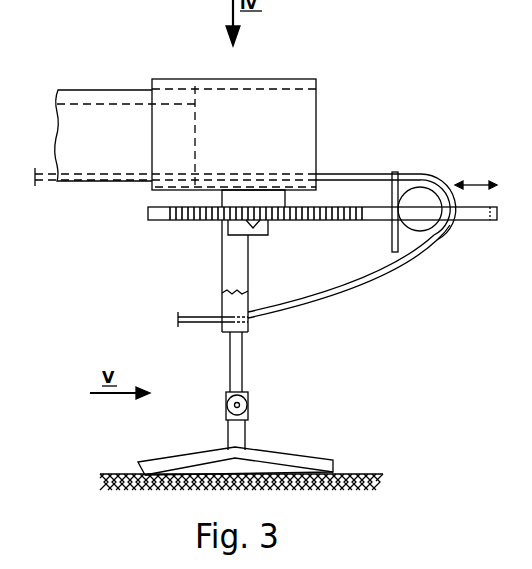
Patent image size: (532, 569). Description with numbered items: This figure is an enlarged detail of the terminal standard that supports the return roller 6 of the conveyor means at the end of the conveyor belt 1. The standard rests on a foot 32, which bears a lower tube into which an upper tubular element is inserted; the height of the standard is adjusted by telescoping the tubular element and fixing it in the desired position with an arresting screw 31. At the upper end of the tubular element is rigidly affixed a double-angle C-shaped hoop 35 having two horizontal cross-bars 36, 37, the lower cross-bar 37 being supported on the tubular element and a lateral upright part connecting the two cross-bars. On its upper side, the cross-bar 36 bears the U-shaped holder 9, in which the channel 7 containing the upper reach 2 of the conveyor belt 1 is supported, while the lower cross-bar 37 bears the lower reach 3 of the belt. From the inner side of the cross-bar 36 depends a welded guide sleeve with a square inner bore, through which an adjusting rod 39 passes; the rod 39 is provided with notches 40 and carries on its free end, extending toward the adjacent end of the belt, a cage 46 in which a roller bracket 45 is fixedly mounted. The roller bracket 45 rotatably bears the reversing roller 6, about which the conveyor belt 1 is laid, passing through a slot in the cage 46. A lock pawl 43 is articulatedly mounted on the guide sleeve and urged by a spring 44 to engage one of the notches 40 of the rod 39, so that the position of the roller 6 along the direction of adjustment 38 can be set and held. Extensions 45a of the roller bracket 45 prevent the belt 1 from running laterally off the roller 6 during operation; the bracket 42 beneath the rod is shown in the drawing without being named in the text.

The conveyor belt 1 is at (121, 80).
The upper reach of conveyor belt 2 is at (348, 174).
The lower reach of conveyor belt 3 is at (371, 281).
The return roller 6 is at (432, 233).
The channel 7 is at (96, 98).
The U-shaped holder 9 is at (292, 98).
The arresting screw 31 is at (249, 405).
The foot 32 is at (292, 462).
The C-shaped hoop 35 is at (224, 278).
The cross-bar 36 is at (233, 200).
The cross-bar 37 is at (232, 326).
The direction arrow 38 is at (473, 205).
The adjusting rod 39 is at (158, 215).
The notches 40 is at (193, 222).
The bracket 42 is at (270, 226).
The lock pawl 43 is at (244, 236).
The spring 44 is at (204, 222).
The roller bracket 45 is at (420, 196).
The extensions of roller bracket 45a is at (396, 172).
The cage 46 is at (493, 222).